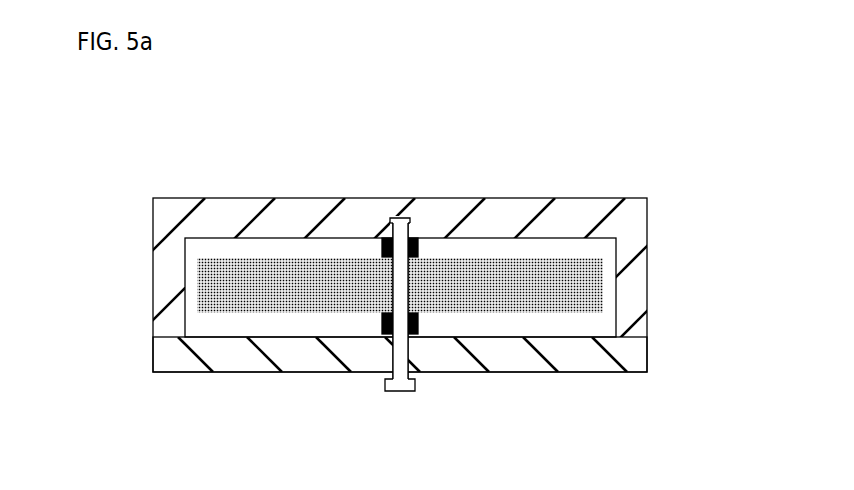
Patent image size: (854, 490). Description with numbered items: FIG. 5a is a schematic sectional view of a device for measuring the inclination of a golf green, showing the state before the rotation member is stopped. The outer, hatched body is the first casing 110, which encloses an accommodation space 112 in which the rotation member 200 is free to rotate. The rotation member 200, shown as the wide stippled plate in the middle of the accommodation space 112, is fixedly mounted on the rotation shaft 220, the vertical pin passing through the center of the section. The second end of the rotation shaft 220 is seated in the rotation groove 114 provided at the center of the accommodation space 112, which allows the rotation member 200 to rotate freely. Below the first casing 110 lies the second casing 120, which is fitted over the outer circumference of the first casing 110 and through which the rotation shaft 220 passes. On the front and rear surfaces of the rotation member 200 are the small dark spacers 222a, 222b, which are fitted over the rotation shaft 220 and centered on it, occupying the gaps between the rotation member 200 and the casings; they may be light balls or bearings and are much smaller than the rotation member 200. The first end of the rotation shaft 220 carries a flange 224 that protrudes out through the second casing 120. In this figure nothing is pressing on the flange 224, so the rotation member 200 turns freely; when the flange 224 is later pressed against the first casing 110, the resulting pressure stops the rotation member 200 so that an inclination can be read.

The first casing 110 is at (652, 195).
The accommodation space 112 is at (607, 316).
The rotation groove 114 is at (410, 218).
The second casing 120 is at (183, 360).
The rotation member 200 is at (202, 275).
The rotation shaft 220 is at (404, 353).
The spacer 222a is at (382, 247).
The spacer 222b is at (383, 322).
The flange 224 is at (386, 389).